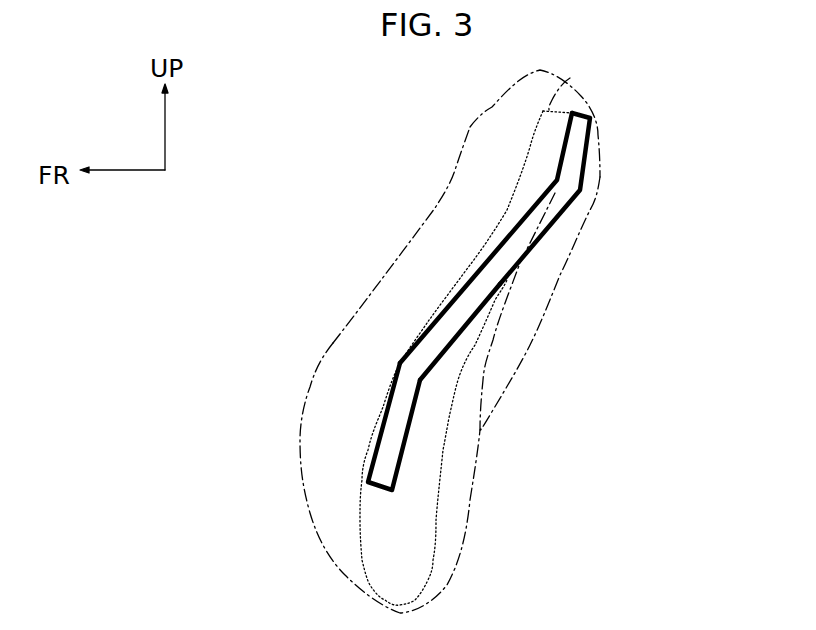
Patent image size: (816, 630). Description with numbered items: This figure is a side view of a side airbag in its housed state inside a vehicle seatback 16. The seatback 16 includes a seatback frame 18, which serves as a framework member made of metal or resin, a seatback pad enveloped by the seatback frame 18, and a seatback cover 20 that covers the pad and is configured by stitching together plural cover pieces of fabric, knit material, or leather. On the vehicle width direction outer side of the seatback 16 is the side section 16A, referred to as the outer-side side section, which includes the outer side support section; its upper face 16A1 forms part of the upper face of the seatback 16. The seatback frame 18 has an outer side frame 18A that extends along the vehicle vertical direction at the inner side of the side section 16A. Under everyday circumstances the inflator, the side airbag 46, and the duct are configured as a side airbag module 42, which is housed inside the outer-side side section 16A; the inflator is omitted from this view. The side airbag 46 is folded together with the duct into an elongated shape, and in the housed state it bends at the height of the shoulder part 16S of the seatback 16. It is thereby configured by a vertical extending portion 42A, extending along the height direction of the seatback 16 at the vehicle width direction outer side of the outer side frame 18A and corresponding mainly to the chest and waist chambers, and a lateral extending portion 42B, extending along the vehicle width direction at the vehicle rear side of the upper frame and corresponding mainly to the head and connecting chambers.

The seatback 16 is at (429, 334).
The side section 16A is at (320, 362).
The upper face 16A1 is at (531, 73).
The shoulder part 16S is at (570, 78).
The seatback frame 18 is at (473, 358).
The outer side frame 18A is at (418, 478).
The seatback cover 20 is at (377, 277).
The side airbag module 42 is at (538, 301).
The vertical extending portion 42A is at (413, 412).
The lateral extending portion 42B is at (589, 128).
The side airbag 46 is at (449, 323).